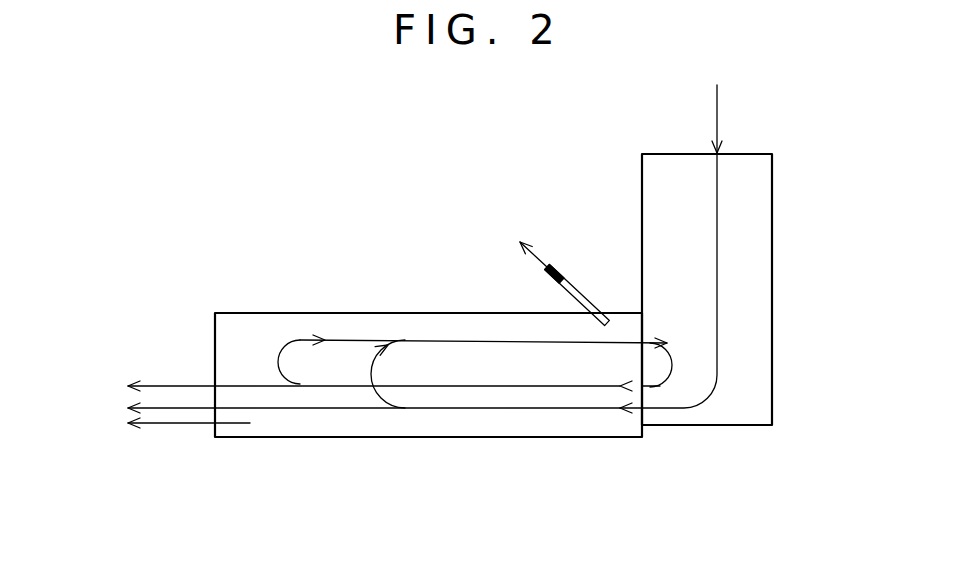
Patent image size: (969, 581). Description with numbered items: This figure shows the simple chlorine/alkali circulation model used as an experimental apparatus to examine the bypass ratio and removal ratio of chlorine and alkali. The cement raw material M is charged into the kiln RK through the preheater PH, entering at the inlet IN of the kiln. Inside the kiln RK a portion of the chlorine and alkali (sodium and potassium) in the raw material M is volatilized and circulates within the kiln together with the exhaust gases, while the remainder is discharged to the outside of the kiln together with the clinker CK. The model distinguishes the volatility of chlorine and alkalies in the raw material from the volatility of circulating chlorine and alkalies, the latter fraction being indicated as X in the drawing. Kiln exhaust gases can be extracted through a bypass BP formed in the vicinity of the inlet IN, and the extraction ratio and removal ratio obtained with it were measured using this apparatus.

The preheater PH is at (772, 188).
The cement raw material M is at (717, 107).
The light intensity path I is at (717, 257).
The kiln RK is at (435, 438).
The inlet of the kiln IN is at (642, 325).
The bypass BP is at (559, 288).
The reflected light fraction X is at (667, 344).
The clinker CK is at (180, 425).